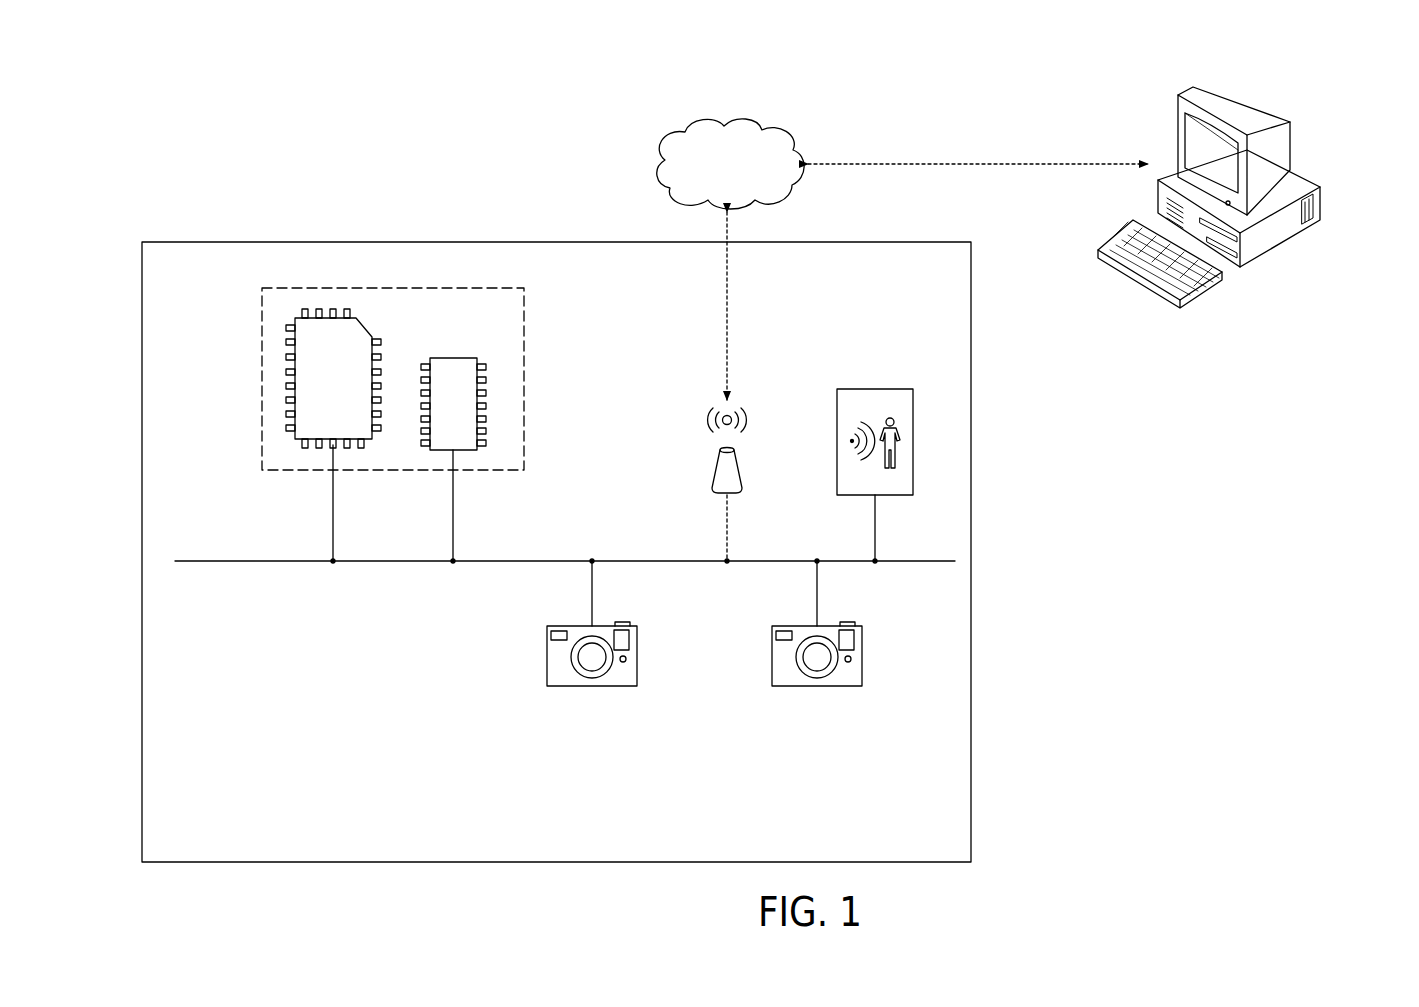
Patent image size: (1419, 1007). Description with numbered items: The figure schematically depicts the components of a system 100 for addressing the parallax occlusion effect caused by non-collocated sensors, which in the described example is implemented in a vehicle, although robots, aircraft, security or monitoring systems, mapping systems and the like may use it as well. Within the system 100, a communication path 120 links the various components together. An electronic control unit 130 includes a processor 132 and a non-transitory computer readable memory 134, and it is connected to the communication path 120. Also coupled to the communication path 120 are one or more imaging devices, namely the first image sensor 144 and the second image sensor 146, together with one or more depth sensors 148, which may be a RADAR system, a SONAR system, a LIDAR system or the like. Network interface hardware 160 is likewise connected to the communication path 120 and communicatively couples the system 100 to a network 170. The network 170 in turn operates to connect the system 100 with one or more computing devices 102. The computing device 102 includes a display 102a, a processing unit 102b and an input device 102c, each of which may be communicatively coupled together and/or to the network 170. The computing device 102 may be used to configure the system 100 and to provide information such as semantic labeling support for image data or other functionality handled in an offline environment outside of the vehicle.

The system 100 is at (232, 153).
The computing device 102 is at (1244, 202).
The display 102a is at (1176, 108).
The processing unit 102b is at (1277, 233).
The input device 102c is at (1203, 290).
The communication path 120 is at (236, 561).
The electronic control unit 130 is at (525, 367).
The processor 132 is at (287, 372).
The non-transitory computer readable memory 134 is at (453, 358).
The first image sensor 144 is at (588, 686).
The second image sensor 146 is at (813, 686).
The depth sensor 148 is at (875, 389).
The network interface hardware 160 is at (718, 464).
The network 170 is at (655, 163).